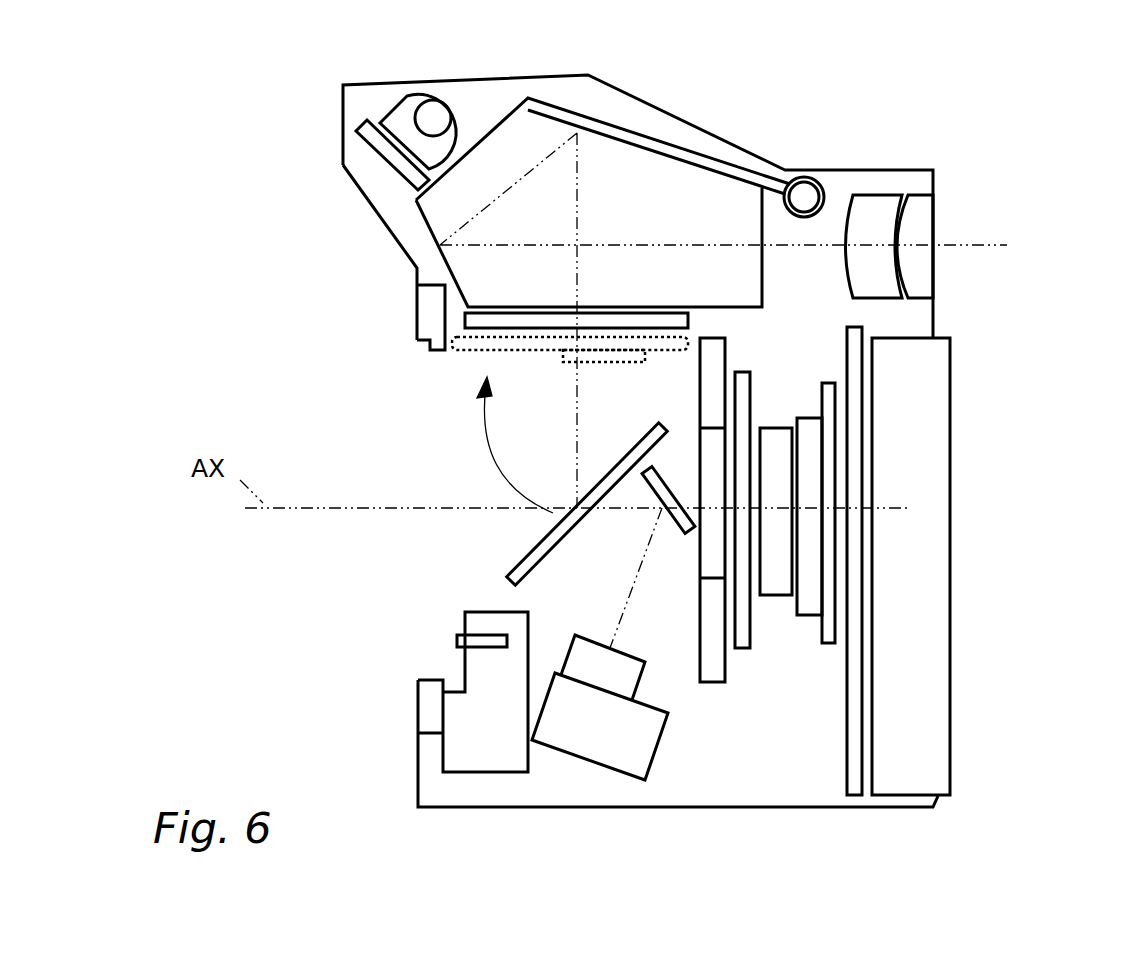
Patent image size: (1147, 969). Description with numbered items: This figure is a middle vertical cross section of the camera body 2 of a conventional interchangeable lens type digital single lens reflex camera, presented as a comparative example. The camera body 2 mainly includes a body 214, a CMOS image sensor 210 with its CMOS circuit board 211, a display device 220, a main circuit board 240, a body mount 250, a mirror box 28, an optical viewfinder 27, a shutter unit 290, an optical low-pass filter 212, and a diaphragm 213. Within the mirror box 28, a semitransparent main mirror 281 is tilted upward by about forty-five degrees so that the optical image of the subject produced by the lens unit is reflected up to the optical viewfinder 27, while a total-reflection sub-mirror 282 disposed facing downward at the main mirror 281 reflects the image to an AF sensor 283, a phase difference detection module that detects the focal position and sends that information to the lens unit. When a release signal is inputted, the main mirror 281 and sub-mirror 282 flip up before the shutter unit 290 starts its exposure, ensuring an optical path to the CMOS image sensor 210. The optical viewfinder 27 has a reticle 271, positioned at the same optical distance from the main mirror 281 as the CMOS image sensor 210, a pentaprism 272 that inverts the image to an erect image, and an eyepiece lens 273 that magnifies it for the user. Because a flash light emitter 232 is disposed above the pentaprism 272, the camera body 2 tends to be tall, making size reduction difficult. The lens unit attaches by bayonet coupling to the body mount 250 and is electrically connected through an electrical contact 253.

The camera body 2 is at (300, 182).
The optical viewfinder 27 is at (940, 114).
The mirror box 28 is at (313, 640).
The flash light emitter 232 is at (366, 122).
The body mount 250 is at (430, 312).
The reticle 271 is at (505, 320).
The pentaprism 272 is at (658, 185).
The eyepiece lens 273 is at (915, 228).
The display device 220 is at (917, 372).
The main circuit board 240 is at (857, 402).
The CMOS circuit board 211 is at (835, 443).
The CMOS image sensor 210 is at (807, 537).
The optical low-pass filter 212 is at (778, 555).
The diaphragm 213 is at (752, 617).
The shutter unit 290 is at (712, 653).
The sub-mirror 282 is at (653, 492).
The main mirror 281 is at (515, 583).
The electrical contact 253 is at (457, 640).
The body 214 is at (487, 747).
The AF sensor 283 is at (630, 727).